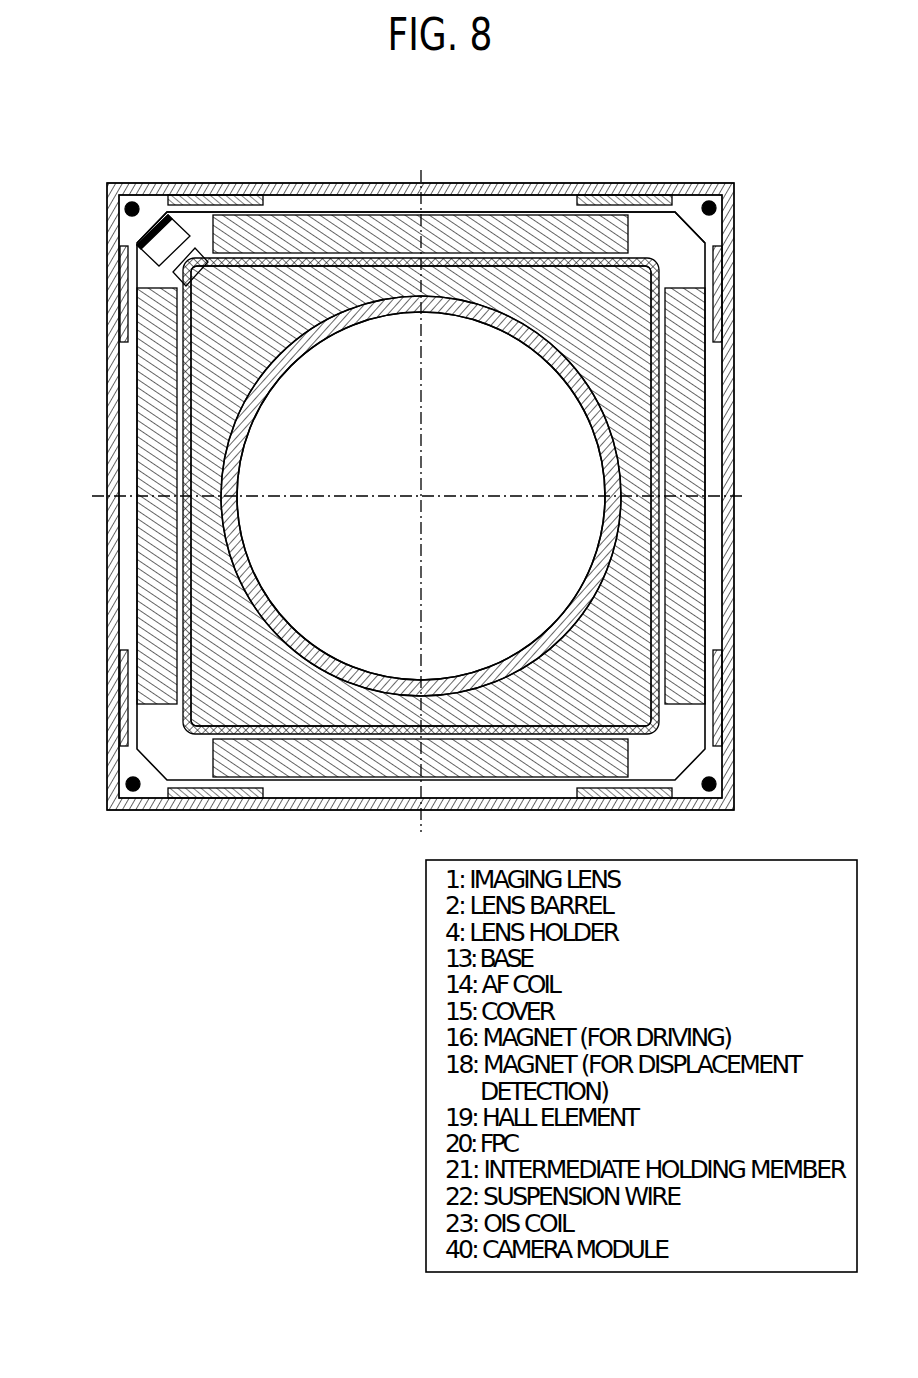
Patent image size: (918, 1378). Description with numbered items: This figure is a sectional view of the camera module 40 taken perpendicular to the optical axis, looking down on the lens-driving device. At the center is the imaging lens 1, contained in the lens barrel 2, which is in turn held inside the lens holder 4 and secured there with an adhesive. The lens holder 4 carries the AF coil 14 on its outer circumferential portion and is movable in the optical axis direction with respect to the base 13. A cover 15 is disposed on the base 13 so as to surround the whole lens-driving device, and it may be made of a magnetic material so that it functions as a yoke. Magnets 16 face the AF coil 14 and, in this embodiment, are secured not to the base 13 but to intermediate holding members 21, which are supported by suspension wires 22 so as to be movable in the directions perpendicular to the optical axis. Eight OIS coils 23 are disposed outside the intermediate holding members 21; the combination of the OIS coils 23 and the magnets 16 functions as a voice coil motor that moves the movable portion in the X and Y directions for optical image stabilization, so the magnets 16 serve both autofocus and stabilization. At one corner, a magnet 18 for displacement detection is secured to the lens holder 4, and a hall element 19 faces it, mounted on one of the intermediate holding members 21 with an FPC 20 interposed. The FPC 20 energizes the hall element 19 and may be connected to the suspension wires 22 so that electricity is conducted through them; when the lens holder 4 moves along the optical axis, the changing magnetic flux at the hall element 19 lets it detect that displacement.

The imaging lens 1 is at (543, 478).
The lens barrel 2 is at (612, 517).
The lens holder 4 is at (637, 392).
The base 13 is at (353, 203).
The AF coil 14 is at (511, 265).
The cover 15 is at (623, 196).
The magnet 16 is at (155, 304).
The magnet for displacement detection 18 is at (178, 277).
The hall element 19 is at (155, 253).
The FPC 20 is at (160, 212).
The intermediate holding member 21 is at (688, 236).
The suspension wire 22 is at (125, 209).
The OIS coil 23 is at (214, 200).
The camera module 40 is at (740, 107).